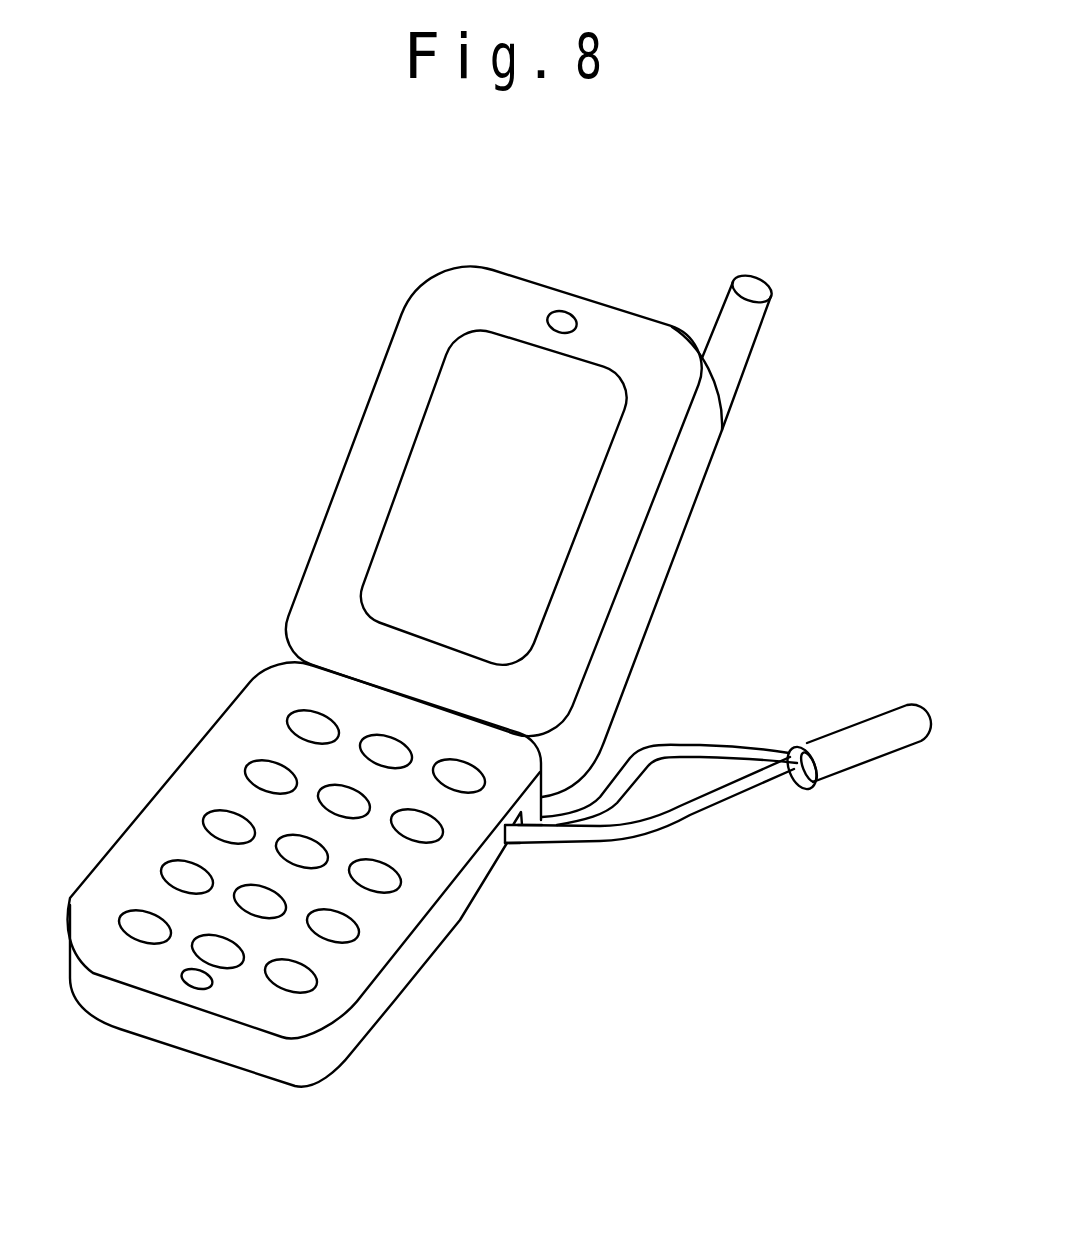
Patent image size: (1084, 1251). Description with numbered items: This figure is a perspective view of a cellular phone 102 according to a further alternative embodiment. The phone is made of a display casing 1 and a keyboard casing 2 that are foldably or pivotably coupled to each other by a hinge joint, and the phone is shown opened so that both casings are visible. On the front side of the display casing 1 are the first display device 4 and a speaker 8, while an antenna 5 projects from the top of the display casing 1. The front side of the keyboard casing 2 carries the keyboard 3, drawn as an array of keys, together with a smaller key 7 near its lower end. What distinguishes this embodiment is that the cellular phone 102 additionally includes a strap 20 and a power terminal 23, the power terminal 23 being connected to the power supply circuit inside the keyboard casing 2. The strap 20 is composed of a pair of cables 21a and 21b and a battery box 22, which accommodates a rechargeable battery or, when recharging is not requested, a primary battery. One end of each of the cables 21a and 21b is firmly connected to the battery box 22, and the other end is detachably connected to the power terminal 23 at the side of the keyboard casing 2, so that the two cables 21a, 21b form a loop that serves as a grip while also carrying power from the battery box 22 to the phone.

The cellular phone 102 is at (203, 388).
The display casing 1 is at (375, 445).
The keyboard casing 2 is at (165, 818).
The keyboard 3 is at (220, 748).
The first display device 4 is at (460, 381).
The antenna 5 is at (742, 331).
The key 7 is at (192, 983).
The speaker 8 is at (564, 320).
The strap 20 is at (770, 688).
The cable 21a is at (626, 830).
The cable 21b is at (677, 752).
The battery box 22 is at (843, 764).
The power terminal 23 is at (508, 845).